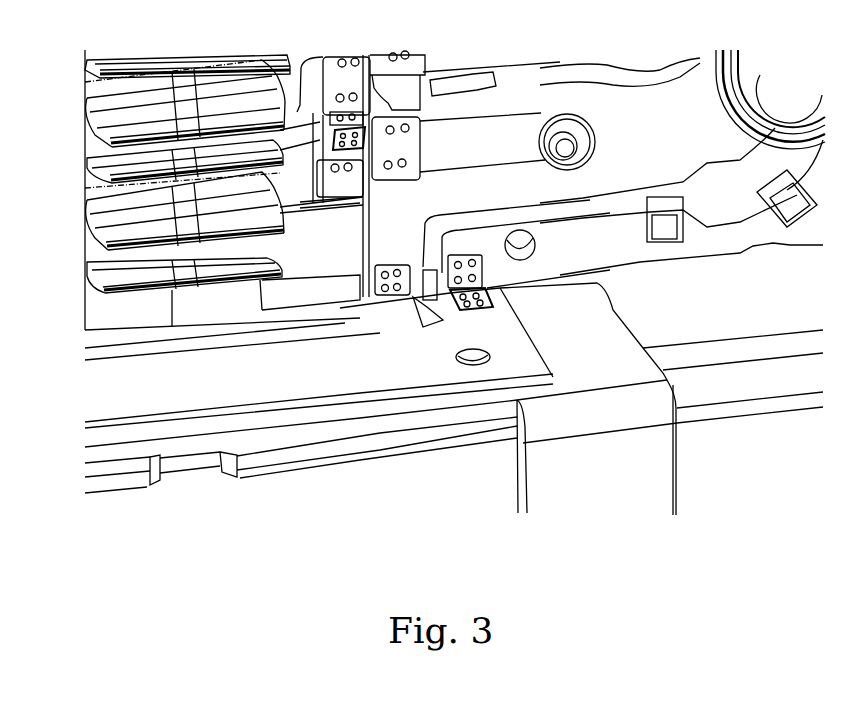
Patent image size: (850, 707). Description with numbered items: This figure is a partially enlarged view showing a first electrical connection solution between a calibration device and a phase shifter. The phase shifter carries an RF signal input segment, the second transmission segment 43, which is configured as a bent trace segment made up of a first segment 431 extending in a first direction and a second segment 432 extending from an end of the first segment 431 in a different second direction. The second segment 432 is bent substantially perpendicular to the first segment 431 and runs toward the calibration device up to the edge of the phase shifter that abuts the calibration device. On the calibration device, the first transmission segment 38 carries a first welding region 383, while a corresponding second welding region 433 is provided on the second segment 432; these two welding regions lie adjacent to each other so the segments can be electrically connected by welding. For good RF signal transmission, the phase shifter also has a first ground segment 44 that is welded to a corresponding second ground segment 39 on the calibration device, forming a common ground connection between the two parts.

The first transmission segment 38 is at (277, 343).
The second ground segment 39 is at (500, 311).
The second transmission segment 43 is at (577, 190).
The first ground segment 44 is at (483, 271).
The first welding region 383 is at (440, 310).
The first segment 431 is at (540, 210).
The second segment 432 is at (427, 245).
The second welding region 433 is at (423, 282).